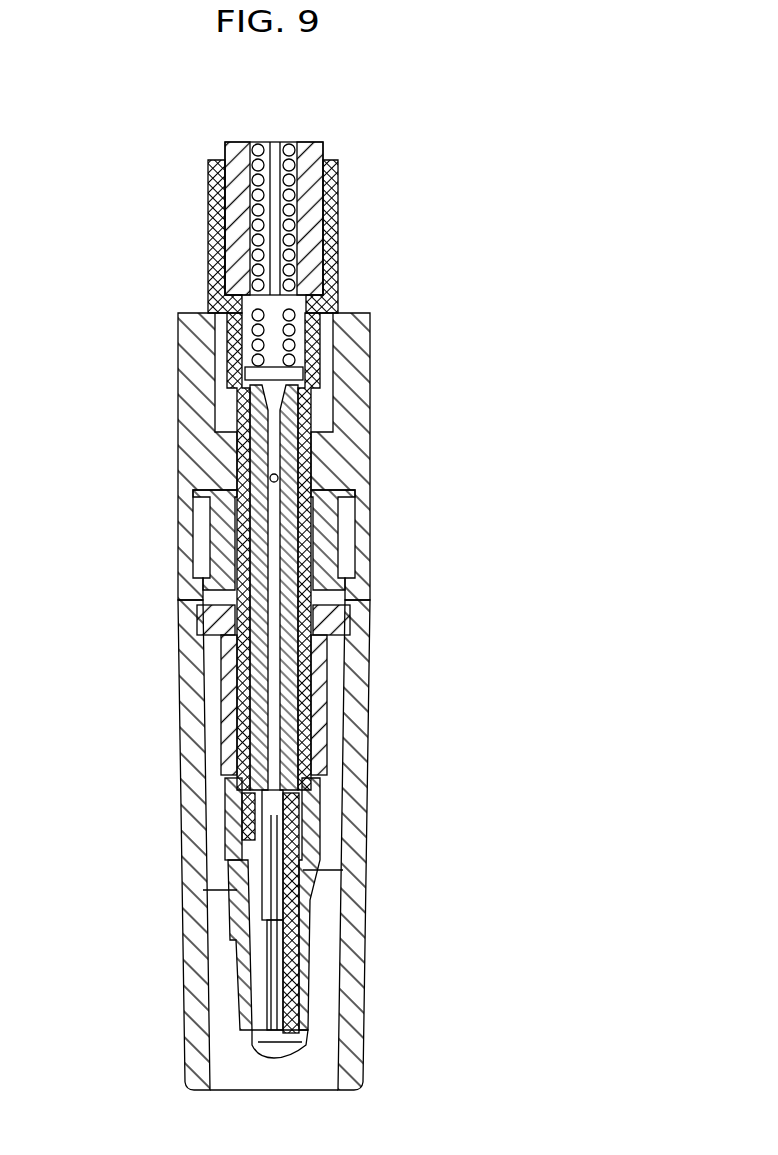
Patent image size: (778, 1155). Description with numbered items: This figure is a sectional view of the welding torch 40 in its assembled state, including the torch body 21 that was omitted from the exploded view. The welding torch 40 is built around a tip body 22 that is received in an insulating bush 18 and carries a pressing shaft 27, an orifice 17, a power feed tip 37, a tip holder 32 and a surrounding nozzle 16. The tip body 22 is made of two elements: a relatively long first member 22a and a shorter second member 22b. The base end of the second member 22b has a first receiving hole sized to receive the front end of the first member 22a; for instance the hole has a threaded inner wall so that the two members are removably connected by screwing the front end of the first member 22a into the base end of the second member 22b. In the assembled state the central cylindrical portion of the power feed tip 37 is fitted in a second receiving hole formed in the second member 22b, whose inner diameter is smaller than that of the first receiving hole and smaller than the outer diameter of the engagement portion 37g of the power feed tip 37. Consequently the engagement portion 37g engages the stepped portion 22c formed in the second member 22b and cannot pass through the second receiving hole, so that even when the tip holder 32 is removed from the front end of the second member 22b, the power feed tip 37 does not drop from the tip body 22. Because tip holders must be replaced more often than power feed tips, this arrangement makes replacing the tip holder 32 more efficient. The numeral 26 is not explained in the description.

The welding torch 40 is at (415, 168).
The torch body 21 is at (207, 193).
The tip body 22 is at (273, 467).
The first member 22a is at (340, 213).
The second member 22b is at (232, 848).
The stepped portion 22c is at (305, 871).
The coil spring 26 is at (357, 316).
The insulating bush 18 is at (357, 362).
The pressing shaft 27 is at (292, 542).
The orifice 17 is at (320, 672).
The power feed tip 37 is at (258, 937).
The engagement portion 37g is at (297, 857).
The nozzle 16 is at (183, 913).
The tip holder 32 is at (305, 1019).